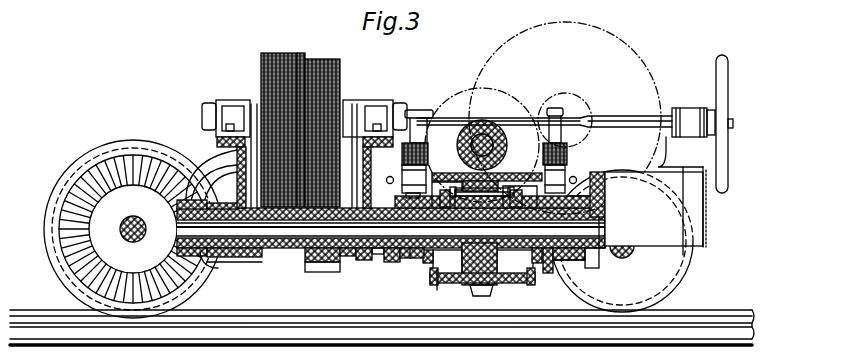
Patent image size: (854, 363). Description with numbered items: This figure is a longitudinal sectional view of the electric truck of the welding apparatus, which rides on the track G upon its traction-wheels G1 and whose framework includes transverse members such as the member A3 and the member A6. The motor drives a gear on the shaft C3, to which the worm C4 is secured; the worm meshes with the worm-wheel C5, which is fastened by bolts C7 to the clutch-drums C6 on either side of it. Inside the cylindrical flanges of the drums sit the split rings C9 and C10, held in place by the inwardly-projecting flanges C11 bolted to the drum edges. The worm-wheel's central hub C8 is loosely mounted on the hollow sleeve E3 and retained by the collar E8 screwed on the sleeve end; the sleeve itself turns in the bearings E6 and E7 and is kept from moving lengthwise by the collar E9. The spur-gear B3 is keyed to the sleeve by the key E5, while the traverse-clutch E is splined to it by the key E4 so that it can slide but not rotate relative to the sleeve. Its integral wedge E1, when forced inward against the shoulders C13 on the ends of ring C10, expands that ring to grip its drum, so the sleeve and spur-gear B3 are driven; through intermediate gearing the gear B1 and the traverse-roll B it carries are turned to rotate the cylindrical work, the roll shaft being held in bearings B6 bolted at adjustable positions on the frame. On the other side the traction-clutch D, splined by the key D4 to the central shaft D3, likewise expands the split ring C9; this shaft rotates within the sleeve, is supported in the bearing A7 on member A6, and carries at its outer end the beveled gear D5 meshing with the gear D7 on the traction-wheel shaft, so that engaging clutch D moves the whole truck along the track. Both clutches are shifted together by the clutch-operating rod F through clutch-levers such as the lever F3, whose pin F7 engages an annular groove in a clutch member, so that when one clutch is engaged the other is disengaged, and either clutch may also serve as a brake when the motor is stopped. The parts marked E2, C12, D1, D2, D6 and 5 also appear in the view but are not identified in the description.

The track G is at (369, 328).
The traction-wheel G1 is at (68, 179).
The gear D7 is at (70, 254).
The bearing A7 is at (607, 212).
The transverse member A6 is at (604, 228).
The transverse member A3 is at (705, 220).
The traverse-clutch E is at (425, 250).
The wedge E1 is at (418, 112).
The collar E2 is at (404, 260).
The hollow sleeve E3 is at (370, 262).
The key E4 is at (390, 252).
The key E5 is at (348, 256).
The bearing E6 is at (391, 263).
The bearing E7 is at (249, 257).
The collar E8 is at (454, 224).
The collar E9 is at (214, 252).
The traverse-roll B is at (283, 60).
The gear B1 is at (318, 64).
The spur-gear B3 is at (320, 273).
The bearing B6 is at (229, 105).
The shaft C3 is at (490, 128).
The worm C4 is at (468, 122).
The worm-wheel C5 is at (490, 286).
The clutch-drum C6 is at (470, 290).
The bolt C7 is at (505, 178).
The central hub C8 is at (442, 262).
The split ring C9 is at (538, 265).
The split ring C10 is at (433, 284).
The inwardly-projecting flange C11 is at (424, 270).
The bracket C12 is at (520, 184).
The shoulder C13 is at (445, 184).
The traction-clutch D is at (582, 268).
The frame wall D1 is at (582, 178).
The frame lug D2 is at (548, 265).
The central shaft D3 is at (597, 256).
The key D4 is at (565, 262).
The beveled gear D5 is at (200, 168).
The bearing D6 is at (218, 196).
The clutch-operating rod F is at (617, 117).
The clutch-lever F3 is at (557, 116).
The pin F7 is at (590, 188).
The pin 5 is at (474, 220).